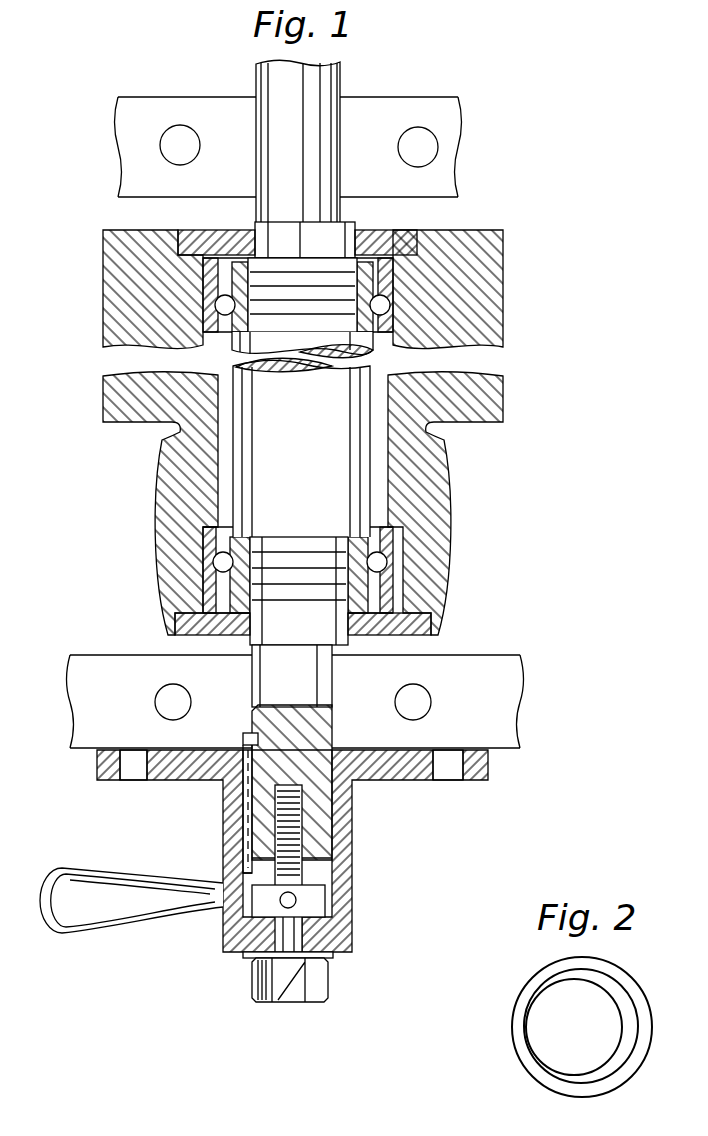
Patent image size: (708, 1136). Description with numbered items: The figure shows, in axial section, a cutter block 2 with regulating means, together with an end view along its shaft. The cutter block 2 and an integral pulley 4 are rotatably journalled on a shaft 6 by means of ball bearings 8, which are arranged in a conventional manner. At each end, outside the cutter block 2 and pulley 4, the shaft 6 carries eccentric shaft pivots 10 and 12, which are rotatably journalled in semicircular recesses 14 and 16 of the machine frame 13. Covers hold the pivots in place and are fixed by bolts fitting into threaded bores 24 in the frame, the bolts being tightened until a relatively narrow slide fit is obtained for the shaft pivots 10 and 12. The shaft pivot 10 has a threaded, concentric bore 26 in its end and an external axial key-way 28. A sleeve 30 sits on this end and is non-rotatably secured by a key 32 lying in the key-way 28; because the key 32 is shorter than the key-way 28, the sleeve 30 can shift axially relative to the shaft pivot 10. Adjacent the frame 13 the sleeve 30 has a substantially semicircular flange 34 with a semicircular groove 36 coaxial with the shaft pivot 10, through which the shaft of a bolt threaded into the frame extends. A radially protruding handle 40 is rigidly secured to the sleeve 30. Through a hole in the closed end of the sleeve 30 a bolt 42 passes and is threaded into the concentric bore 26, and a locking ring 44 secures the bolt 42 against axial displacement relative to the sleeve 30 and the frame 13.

In FIG. 1, the cutter block 2 is at (483, 302).
In FIG. 1, the pulley 4 is at (437, 527).
In FIG. 1, the shaft 6 is at (353, 482).
In FIG. 1, the ball bearings 8 is at (387, 307).
In FIG. 2, the shaft pivot 10 is at (549, 1027).
In FIG. 1, the shaft pivot 12 is at (327, 115).
In FIG. 2, the shaft pivot 12 is at (545, 1035).
In FIG. 1, the machine frame 13 is at (445, 170).
In FIG. 1, the semicircular recess 14 is at (320, 733).
In FIG. 1, the semicircular recess 16 is at (340, 172).
In FIG. 1, the threaded bores 24 is at (178, 137).
In FIG. 1, the threaded concentric bore 26 is at (307, 810).
In FIG. 1, the key-way 28 is at (250, 737).
In FIG. 1, the sleeve 30 is at (337, 938).
In FIG. 1, the key 32 is at (250, 852).
In FIG. 1, the semicircular flange 34 is at (188, 772).
In FIG. 1, the semicircular groove 36 is at (442, 772).
In FIG. 1, the handle 40 is at (127, 907).
In FIG. 1, the bolt 42 is at (313, 980).
In FIG. 1, the locking ring 44 is at (310, 900).